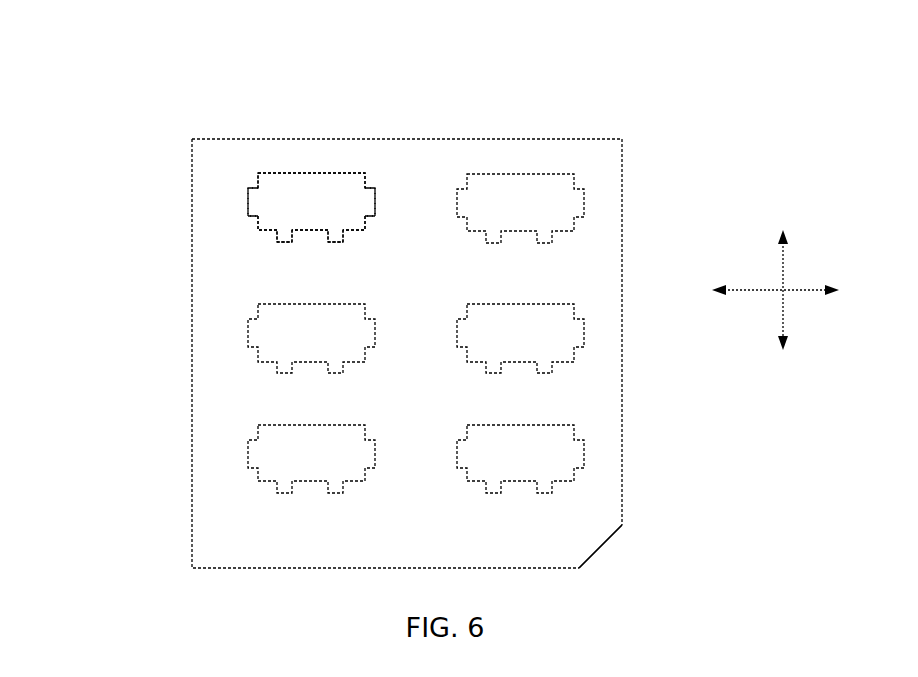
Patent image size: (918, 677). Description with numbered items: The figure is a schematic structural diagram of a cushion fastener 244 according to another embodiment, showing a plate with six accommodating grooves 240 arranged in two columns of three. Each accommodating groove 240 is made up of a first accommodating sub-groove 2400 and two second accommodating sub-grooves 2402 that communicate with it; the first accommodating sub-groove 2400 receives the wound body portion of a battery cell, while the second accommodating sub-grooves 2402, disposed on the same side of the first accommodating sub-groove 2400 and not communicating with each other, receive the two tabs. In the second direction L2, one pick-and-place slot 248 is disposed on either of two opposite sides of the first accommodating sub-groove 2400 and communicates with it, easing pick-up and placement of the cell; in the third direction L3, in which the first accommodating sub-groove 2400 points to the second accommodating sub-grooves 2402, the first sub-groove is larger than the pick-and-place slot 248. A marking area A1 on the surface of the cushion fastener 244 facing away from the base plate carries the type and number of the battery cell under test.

The cushion fastener 244 is at (295, 42).
The accommodating groove 240 is at (130, 102).
The first accommodating sub-groove 2400 is at (250, 201).
The second accommodating sub-groove 2402 is at (333, 234).
The pick-and-place slot 248 is at (256, 203).
The marking area A1 is at (590, 543).
The second direction L2 is at (792, 291).
The third direction L3 is at (785, 304).